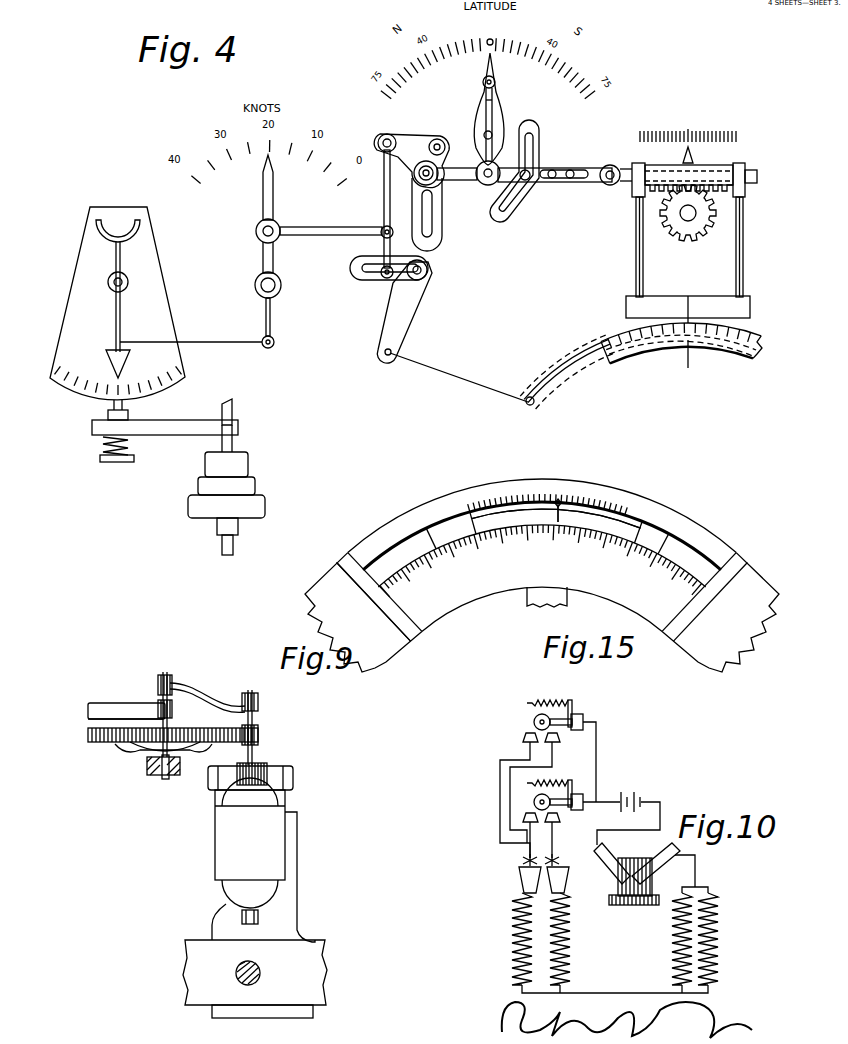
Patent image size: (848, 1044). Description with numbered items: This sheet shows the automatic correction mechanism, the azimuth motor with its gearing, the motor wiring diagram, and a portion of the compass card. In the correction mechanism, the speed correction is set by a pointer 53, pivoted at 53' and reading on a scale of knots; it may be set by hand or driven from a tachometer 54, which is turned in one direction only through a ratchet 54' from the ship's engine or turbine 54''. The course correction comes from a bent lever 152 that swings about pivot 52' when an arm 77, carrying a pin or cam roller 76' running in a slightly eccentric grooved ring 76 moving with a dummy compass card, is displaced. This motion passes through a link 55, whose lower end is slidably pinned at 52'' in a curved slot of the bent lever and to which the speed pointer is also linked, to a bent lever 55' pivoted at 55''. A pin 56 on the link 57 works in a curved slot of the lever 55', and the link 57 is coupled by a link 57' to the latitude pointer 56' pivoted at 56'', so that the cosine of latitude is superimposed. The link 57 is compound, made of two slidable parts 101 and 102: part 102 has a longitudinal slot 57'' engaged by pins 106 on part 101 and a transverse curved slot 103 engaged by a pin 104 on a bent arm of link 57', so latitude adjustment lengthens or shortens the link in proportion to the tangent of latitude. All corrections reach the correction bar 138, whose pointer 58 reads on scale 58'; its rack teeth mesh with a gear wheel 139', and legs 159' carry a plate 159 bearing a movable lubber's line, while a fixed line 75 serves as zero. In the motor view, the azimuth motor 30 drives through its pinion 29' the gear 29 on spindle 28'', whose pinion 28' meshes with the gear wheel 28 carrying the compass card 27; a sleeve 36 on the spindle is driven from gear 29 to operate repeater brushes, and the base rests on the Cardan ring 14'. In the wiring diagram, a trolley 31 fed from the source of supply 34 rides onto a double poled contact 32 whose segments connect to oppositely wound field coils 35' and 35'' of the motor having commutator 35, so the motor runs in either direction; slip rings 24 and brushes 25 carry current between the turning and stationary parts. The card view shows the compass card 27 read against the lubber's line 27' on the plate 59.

In FIG. 4, the speed pointer 53 is at (281, 214).
In FIG. 4, the pivot 53' is at (239, 304).
In FIG. 4, the tachometer 54 is at (117, 308).
In FIG. 4, the ratchet 54' is at (136, 436).
In FIG. 4, the ship's engine or turbine 54'' is at (226, 477).
In FIG. 4, the link 55 is at (362, 206).
In FIG. 4, the bent lever 55' is at (392, 143).
In FIG. 4, the pivot 55'' is at (420, 132).
In FIG. 4, the pin 56 is at (436, 206).
In FIG. 4, the latitude pointer 56' is at (459, 90).
In FIG. 4, the pivot 56'' is at (524, 124).
In FIG. 4, the link 57 is at (483, 139).
In FIG. 4, the link 57' is at (513, 99).
In FIG. 4, the longitudinal slot 57'' is at (555, 159).
In FIG. 4, the link part 101 is at (463, 172).
In FIG. 4, the link part 102 is at (606, 184).
In FIG. 4, the transverse curved slot 103 is at (509, 209).
In FIG. 4, the pin 104 is at (529, 170).
In FIG. 4, the pins 106 is at (570, 181).
In FIG. 4, the bar 138 is at (662, 176).
In FIG. 4, the gear wheel 139' is at (680, 227).
In FIG. 4, the plate 159 is at (688, 307).
In FIG. 4, the legs 159' is at (708, 247).
In FIG. 4, the pointer 58 is at (700, 158).
In FIG. 15, the pointer 58 is at (569, 490).
In FIG. 4, the scale 58' is at (687, 121).
In FIG. 15, the scale 58' is at (548, 488).
In FIG. 4, the zero line 75 is at (686, 363).
In FIG. 4, the grooved ring 76 is at (565, 363).
In FIG. 4, the pin or cam roller 76' is at (561, 410).
In FIG. 4, the arm 77 is at (460, 379).
In FIG. 4, the bent lever 152 is at (402, 325).
In FIG. 4, the pivot 52' is at (444, 276).
In FIG. 4, the pin 52'' is at (371, 286).
In FIG. 15, the compass card 27 is at (542, 575).
In FIG. 15, the lubber line 27' is at (535, 537).
In FIG. 15, the plate 59 is at (620, 506).
In FIG. 15, the Cardan ring 14' is at (374, 602).
In FIG. 9, the Cardan ring 14' is at (255, 979).
In FIG. 9, the gear wheel 28 is at (159, 741).
In FIG. 9, the pinion 28' is at (188, 713).
In FIG. 9, the spindle 28'' is at (97, 721).
In FIG. 9, the gear 29 is at (148, 744).
In FIG. 9, the pinion 29' is at (276, 727).
In FIG. 9, the commutator 35 is at (276, 768).
In FIG. 10, the commutator 35 is at (627, 874).
In FIG. 9, the sleeve 36 is at (150, 771).
In FIG. 9, the azimuth motor 30 is at (261, 854).
In FIG. 10, the wheel or trolley contact 31 is at (535, 717).
In FIG. 10, the double poled contact 32 is at (522, 737).
In FIG. 10, the source of electrical supply 34 is at (629, 794).
In FIG. 10, the slip rings 24 is at (520, 860).
In FIG. 10, the brushes 25 is at (516, 872).
In FIG. 10, the field coil 35' is at (614, 939).
In FIG. 10, the field coil 35'' is at (621, 939).